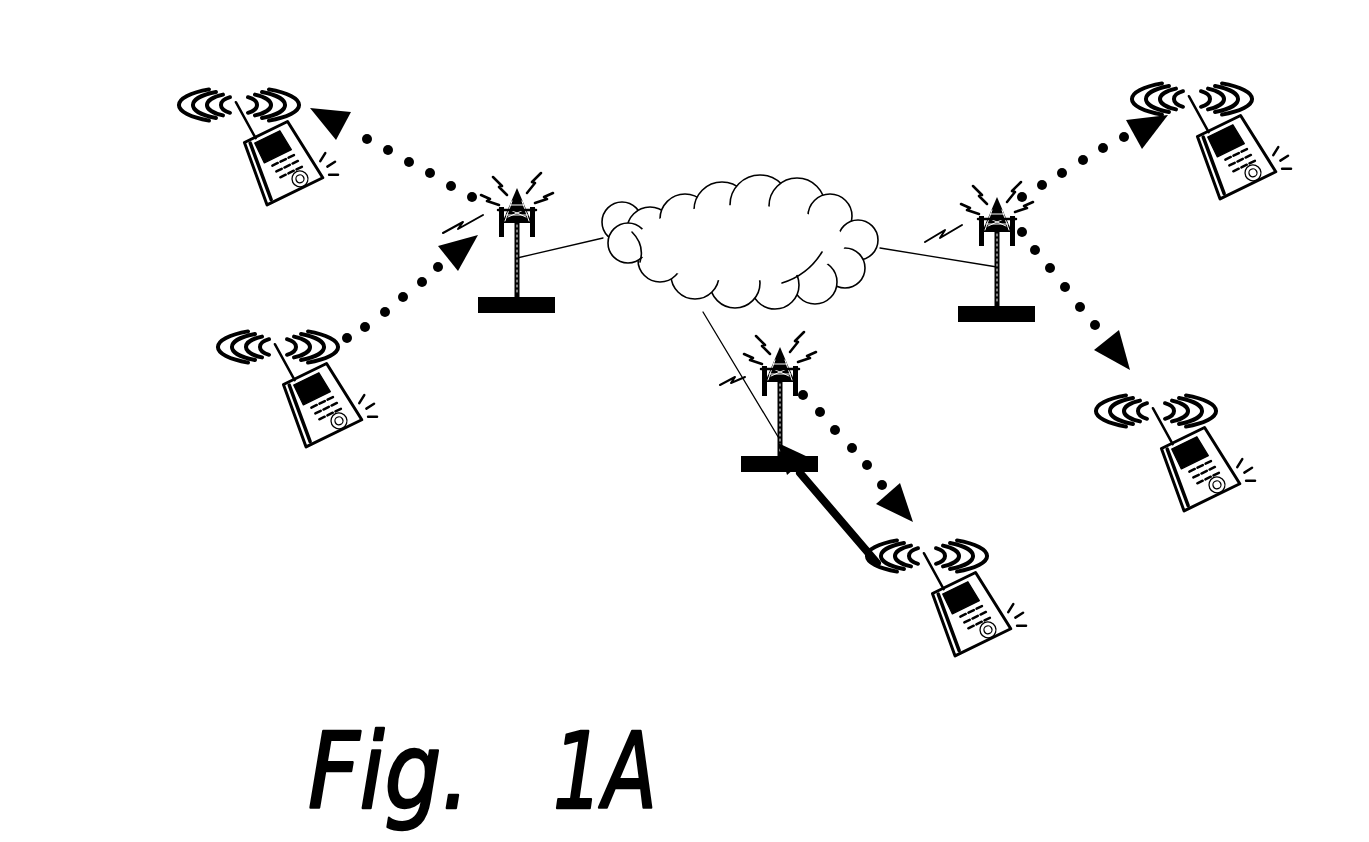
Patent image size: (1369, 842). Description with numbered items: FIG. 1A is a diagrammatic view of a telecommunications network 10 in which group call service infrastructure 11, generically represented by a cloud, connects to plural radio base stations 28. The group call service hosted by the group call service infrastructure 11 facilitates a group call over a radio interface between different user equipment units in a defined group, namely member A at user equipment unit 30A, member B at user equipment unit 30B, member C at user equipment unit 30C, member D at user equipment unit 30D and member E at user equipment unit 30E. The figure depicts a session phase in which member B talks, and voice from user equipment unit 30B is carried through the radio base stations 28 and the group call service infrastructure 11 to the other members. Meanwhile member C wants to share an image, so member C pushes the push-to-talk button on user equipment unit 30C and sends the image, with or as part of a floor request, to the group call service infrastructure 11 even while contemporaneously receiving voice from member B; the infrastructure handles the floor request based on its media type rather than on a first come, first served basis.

The telecommunications network 10 is at (705, 100).
The group call service infrastructure 11 is at (705, 193).
The radio base stations 28 is at (546, 317).
The user equipment unit of member A 30A is at (262, 198).
The user equipment unit of member B 30B is at (300, 435).
The user equipment unit of member C 30C is at (950, 635).
The user equipment unit of member D 30D is at (1178, 490).
The user equipment unit of member E 30E is at (1275, 167).